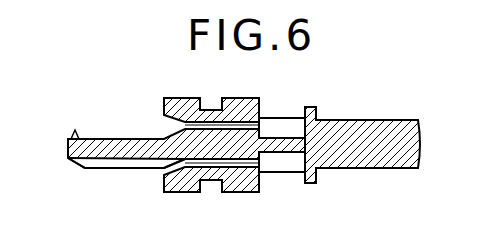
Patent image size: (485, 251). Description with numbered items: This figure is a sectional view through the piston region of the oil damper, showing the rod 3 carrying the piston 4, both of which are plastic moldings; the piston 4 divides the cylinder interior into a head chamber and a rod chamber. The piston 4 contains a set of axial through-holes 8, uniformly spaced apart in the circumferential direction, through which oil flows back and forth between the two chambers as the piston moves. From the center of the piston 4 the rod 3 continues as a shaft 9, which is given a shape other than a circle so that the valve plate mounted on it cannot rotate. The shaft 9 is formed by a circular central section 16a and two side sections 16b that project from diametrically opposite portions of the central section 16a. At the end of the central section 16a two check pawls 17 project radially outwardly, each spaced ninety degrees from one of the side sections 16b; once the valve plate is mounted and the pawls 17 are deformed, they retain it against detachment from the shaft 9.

The rod 3 is at (368, 134).
The piston 4 is at (237, 183).
The axial through-holes 8 is at (262, 119).
The shaft 9 is at (140, 208).
The circular central section 16a is at (104, 149).
The side sections 16b is at (137, 166).
The check pawls 17 is at (73, 134).